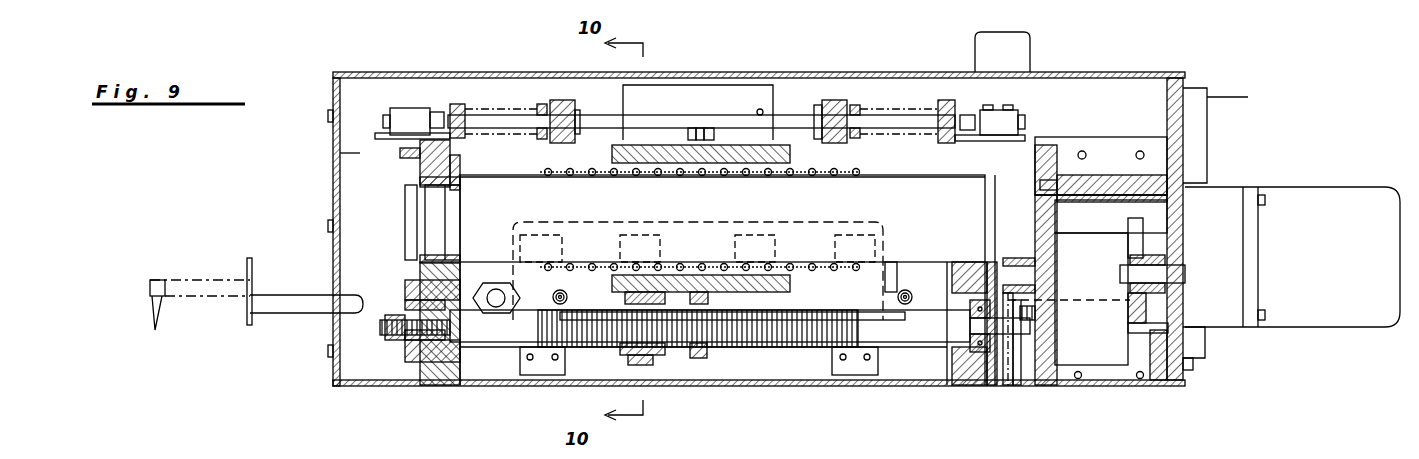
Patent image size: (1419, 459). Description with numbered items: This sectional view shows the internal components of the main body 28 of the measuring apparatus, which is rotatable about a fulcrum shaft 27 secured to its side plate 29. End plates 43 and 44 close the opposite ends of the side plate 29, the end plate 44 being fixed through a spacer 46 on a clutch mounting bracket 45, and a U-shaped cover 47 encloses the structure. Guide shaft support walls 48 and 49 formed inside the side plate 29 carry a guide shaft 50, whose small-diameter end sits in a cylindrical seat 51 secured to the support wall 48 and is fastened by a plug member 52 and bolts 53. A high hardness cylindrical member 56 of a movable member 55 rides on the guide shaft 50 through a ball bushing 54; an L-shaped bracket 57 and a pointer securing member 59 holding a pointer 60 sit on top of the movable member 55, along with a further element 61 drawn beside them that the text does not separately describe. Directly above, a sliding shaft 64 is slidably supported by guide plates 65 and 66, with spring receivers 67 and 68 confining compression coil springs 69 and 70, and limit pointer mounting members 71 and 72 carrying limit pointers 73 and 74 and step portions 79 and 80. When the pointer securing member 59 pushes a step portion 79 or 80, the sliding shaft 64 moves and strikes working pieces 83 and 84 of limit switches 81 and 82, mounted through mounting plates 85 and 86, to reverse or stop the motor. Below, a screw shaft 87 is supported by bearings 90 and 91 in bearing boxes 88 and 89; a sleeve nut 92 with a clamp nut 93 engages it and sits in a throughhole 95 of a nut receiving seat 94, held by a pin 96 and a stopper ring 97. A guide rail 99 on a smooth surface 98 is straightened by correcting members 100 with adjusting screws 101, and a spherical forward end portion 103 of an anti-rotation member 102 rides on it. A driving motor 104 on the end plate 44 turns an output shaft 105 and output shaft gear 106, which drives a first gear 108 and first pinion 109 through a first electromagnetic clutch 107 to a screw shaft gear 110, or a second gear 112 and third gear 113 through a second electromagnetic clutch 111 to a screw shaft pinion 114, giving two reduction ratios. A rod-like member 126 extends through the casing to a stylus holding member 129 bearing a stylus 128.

The main body of the measuring apparatus 28 is at (320, 62).
The side plate 29 is at (340, 153).
The end plate 43 is at (334, 175).
The end plate 44 is at (1180, 150).
The clutch mounting bracket 45 is at (1125, 155).
The spacer 46 is at (1128, 180).
The cover 47 is at (1058, 70).
The guide shaft support wall 48 is at (420, 165).
The guide shaft support wall 49 is at (980, 187).
The guide shaft 50 is at (875, 185).
The cylindrical seat 51 is at (462, 170).
The plug member 52 is at (412, 232).
The bolts 53 is at (410, 205).
The ball bushing 54 is at (828, 174).
The movable member 55 is at (748, 165).
The high hardness cylindrical member 56 is at (785, 176).
The L-shaped bracket 57 is at (760, 88).
The pointer securing member 59 is at (690, 130).
The pointer 60 is at (700, 130).
The sensor element 61 is at (712, 130).
The sliding shaft 64 is at (785, 118).
The guide plate 65 is at (458, 104).
The guide plate 66 is at (945, 100).
The spring receiver 67 is at (540, 104).
The spring receiver 68 is at (856, 105).
The compression coil spring 69 is at (470, 110).
The compression coil spring 70 is at (862, 109).
The limit pointer mounting member 71 is at (569, 50).
The limit pointer mounting member 72 is at (835, 100).
The limit pointer 73 is at (580, 114).
The limit pointer 74 is at (817, 105).
The step portion 79 is at (612, 148).
The step portion 80 is at (818, 136).
The limit switch 81 is at (400, 115).
The limit switch 82 is at (1006, 120).
The working piece 83 is at (440, 112).
The working piece 84 is at (965, 115).
The mounting plate 85 is at (375, 138).
The mounting plate 86 is at (1020, 138).
The screw shaft 87 is at (703, 323).
The bearing box 88 is at (405, 292).
The bearing box 89 is at (970, 262).
The bearing 90 is at (408, 355).
The bearing 91 is at (965, 352).
The sleeve nut 92 is at (620, 352).
The clamp nut 93 is at (698, 358).
The nut receiving seat 94 is at (648, 365).
The throughhole 95 is at (625, 295).
The pin 96 is at (625, 365).
The stopper ring 97 is at (668, 355).
The smooth surface 98 is at (865, 292).
The guide rail 99 is at (880, 312).
The guide rail correcting members 100 is at (520, 270).
The adjusting screw 101 is at (575, 265).
The member for preventing the movable member from rotating 102 is at (720, 300).
The spherical forward end portion 103 is at (728, 343).
The driving motor 104 is at (1375, 197).
The output shaft 105 is at (1122, 272).
The output shaft gear 106 is at (1170, 270).
The first electromagnetic clutch 107 is at (1133, 240).
The first gear 108 is at (1170, 235).
The first pinion 109 is at (1010, 258).
The screw shaft gear 110 is at (1005, 385).
The second electromagnetic clutch 111 is at (1110, 365).
The second gear 112 is at (1158, 380).
The third gear 113 is at (1018, 385).
The screw shaft pinion 114 is at (1030, 298).
The rod-like member 126 is at (312, 318).
The stylus 128 is at (156, 320).
The stylus holding member 129 is at (242, 300).
The fulcrum shaft 27 is at (490, 300).